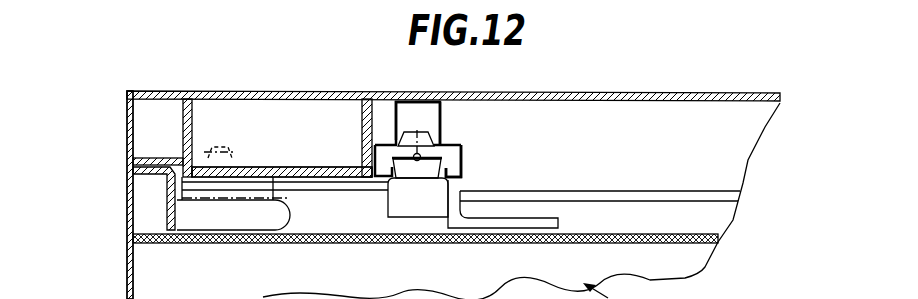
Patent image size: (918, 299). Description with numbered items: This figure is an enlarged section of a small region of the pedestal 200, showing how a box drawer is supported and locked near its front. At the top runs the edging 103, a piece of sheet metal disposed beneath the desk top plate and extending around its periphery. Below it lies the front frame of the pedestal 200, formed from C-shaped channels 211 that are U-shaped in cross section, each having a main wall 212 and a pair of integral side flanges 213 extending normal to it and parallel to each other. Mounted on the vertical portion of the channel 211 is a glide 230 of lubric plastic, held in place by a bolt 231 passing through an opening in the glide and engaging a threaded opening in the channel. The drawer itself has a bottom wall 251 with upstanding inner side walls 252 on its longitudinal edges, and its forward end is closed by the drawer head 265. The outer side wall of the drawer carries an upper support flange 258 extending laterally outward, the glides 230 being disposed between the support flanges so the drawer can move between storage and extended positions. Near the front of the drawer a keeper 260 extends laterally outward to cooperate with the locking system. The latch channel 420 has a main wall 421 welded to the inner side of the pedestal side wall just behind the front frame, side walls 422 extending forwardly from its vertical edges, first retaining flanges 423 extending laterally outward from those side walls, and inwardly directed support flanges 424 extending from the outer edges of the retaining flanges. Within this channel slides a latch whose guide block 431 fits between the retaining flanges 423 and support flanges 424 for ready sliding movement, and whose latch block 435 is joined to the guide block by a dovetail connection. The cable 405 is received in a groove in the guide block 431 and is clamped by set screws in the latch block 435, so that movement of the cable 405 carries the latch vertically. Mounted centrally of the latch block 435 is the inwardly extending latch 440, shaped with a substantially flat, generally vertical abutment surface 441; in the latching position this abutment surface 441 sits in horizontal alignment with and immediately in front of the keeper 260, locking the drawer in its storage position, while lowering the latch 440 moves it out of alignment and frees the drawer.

The edging 103 is at (534, 92).
The pedestal 200 is at (138, 80).
The drawer head 265 is at (127, 290).
The side flanges 213 is at (191, 125).
The main wall 212 is at (303, 167).
The C-shaped channels 211 is at (277, 155).
The bolts 231 is at (219, 147).
The glides 230 is at (163, 214).
The guide block 431 is at (372, 165).
The latch block 435 is at (393, 182).
The inner side walls 252 is at (309, 245).
The bottom wall 251 is at (241, 286).
The upper support flange 258 is at (701, 222).
The keeper 260 is at (462, 212).
The latch 440 is at (417, 205).
The abutment surface 441 is at (447, 181).
The latch channel 420 is at (452, 126).
The main wall 421 is at (413, 101).
The side walls 422 is at (444, 114).
The first retaining flanges 423 is at (460, 138).
The support flanges 424 is at (466, 158).
The cable 405 is at (415, 155).